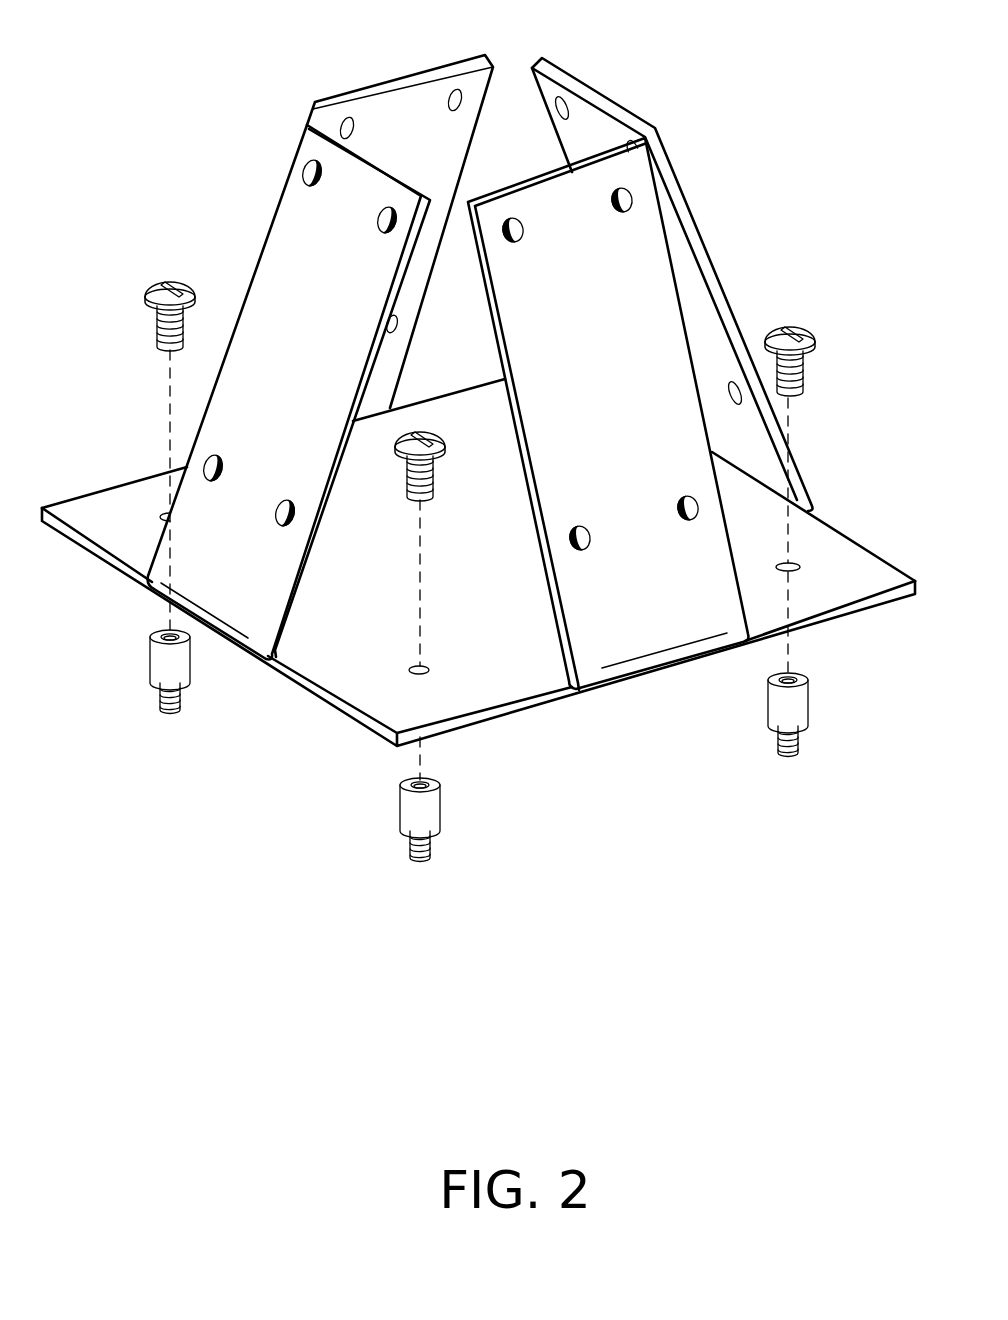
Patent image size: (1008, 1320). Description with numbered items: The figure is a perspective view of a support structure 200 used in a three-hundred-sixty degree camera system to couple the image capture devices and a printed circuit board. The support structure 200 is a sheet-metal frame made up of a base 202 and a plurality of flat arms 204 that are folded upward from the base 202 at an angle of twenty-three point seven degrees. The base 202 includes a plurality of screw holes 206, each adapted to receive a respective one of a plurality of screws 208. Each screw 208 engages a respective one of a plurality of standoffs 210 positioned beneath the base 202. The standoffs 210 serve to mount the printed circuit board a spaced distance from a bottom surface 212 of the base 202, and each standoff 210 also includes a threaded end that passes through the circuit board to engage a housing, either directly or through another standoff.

The support structure 200 is at (162, 229).
The base 202 is at (333, 692).
The flat arms 204 is at (308, 118).
The screw holes 206 is at (165, 515).
The screws 208 is at (170, 325).
The standoffs 210 is at (162, 668).
The bottom surface 212 is at (472, 722).